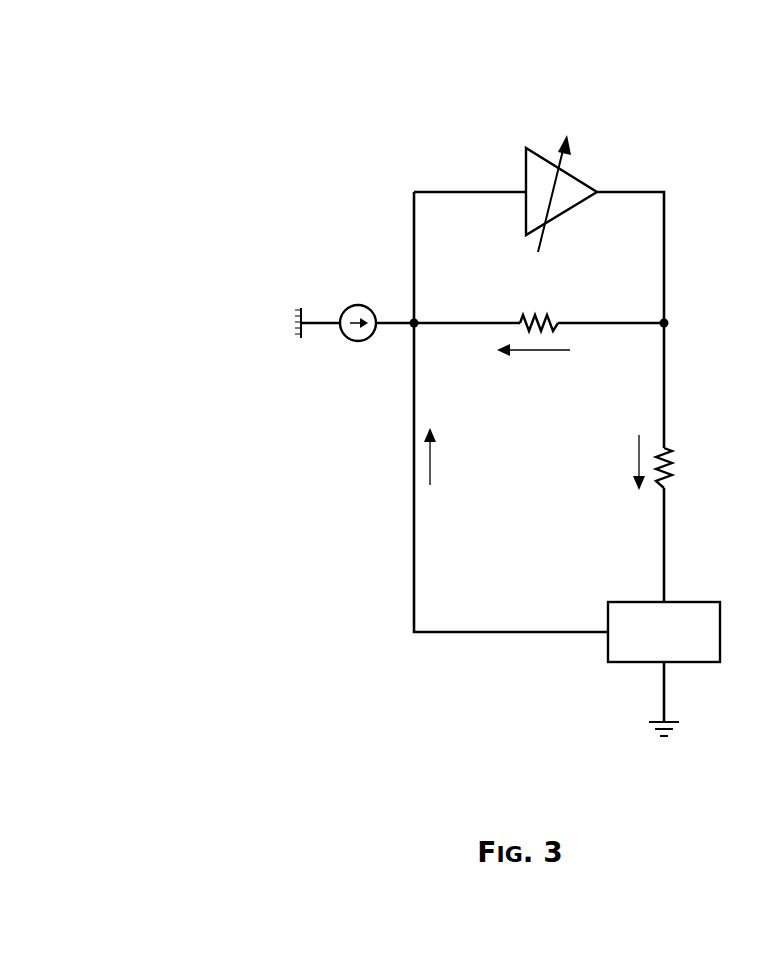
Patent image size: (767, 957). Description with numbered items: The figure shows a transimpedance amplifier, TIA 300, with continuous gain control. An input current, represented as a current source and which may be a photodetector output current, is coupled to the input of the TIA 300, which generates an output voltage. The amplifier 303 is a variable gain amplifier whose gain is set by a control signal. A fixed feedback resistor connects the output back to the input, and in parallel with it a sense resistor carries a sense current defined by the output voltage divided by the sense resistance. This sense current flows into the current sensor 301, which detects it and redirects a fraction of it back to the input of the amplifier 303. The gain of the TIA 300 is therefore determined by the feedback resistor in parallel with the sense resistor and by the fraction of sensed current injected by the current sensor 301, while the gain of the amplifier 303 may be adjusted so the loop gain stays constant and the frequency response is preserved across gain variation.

The TIA 300 is at (160, 150).
The amplifier 303 is at (526, 148).
The current sensor 301 is at (720, 622).